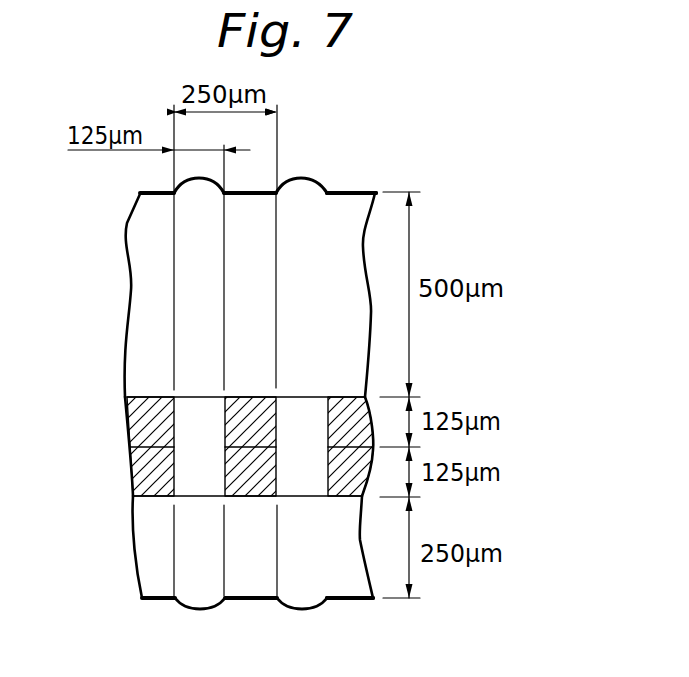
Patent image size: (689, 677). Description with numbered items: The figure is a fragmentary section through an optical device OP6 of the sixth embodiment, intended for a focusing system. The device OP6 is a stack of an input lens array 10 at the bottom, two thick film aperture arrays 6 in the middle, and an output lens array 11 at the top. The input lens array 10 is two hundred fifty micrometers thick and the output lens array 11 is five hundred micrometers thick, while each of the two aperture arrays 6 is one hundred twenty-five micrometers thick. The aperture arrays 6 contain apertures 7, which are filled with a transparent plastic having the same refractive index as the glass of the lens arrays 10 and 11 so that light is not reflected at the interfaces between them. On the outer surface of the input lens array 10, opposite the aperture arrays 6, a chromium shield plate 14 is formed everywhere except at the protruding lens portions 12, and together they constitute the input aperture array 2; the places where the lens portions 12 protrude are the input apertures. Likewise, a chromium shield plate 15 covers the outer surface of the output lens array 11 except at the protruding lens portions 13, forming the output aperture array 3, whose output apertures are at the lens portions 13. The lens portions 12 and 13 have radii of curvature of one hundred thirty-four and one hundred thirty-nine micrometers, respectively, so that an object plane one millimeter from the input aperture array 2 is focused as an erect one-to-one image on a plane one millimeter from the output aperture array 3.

The input aperture array 2 is at (156, 603).
The output aperture array 3 is at (162, 192).
The thick film aperture arrays 6 is at (147, 467).
The apertures 7 is at (202, 430).
The input lens array 10 is at (143, 570).
The output lens array 11 is at (140, 287).
The lens portions 12 is at (208, 612).
The lens portions 13 is at (203, 187).
The shield plate 14 is at (360, 603).
The shield plate 15 is at (358, 192).
The optical device OP6 is at (458, 192).